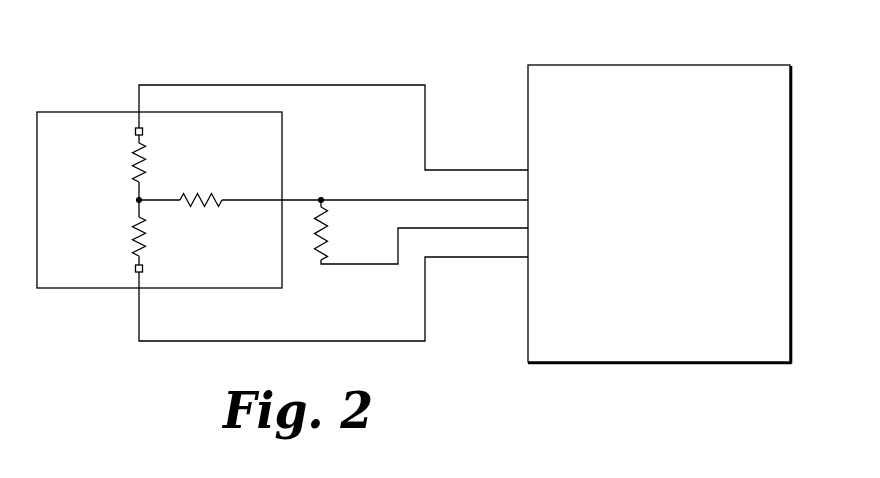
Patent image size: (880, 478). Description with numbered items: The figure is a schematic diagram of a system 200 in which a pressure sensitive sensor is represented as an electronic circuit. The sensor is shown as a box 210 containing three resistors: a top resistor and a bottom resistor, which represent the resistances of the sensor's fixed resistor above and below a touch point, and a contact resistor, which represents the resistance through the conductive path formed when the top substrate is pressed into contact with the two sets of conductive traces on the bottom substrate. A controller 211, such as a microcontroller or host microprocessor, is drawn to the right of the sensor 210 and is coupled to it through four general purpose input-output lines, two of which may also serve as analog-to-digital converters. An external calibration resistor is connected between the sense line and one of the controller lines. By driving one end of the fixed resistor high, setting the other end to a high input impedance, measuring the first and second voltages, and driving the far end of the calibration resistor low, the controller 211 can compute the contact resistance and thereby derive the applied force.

The system 200 is at (461, 50).
The sensor box 210 is at (67, 288).
The controller 211 is at (707, 362).